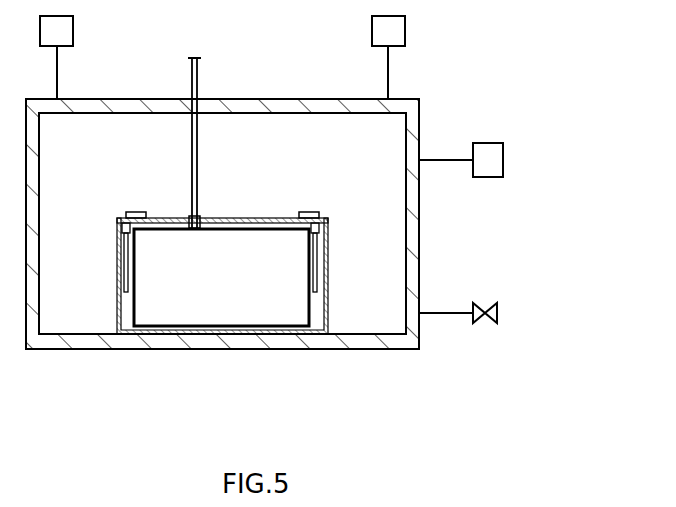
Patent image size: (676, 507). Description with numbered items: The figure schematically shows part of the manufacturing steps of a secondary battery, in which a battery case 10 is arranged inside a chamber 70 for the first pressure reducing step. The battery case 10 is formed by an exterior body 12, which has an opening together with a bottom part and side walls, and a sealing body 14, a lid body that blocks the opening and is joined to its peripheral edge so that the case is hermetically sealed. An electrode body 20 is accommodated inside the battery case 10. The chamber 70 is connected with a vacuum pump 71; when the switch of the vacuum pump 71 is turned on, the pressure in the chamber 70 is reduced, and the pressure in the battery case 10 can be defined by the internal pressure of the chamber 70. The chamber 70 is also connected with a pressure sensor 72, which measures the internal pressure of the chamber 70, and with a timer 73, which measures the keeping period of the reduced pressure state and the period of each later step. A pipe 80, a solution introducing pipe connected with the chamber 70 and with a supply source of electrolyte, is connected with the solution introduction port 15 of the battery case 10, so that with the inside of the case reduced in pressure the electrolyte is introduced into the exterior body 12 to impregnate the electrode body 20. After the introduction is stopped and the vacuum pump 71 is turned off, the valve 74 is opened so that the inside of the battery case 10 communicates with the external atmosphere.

The battery case 10 is at (260, 243).
The exterior body 12 is at (326, 262).
The sealing body 14 is at (275, 218).
The solution introduction port 15 is at (200, 217).
The electrode body 20 is at (310, 309).
The chamber 70 is at (425, 118).
The vacuum pump 71 is at (512, 160).
The pressure sensor 72 is at (79, 30).
The timer 73 is at (412, 30).
The valve 74 is at (503, 309).
The pipe 80 is at (201, 75).